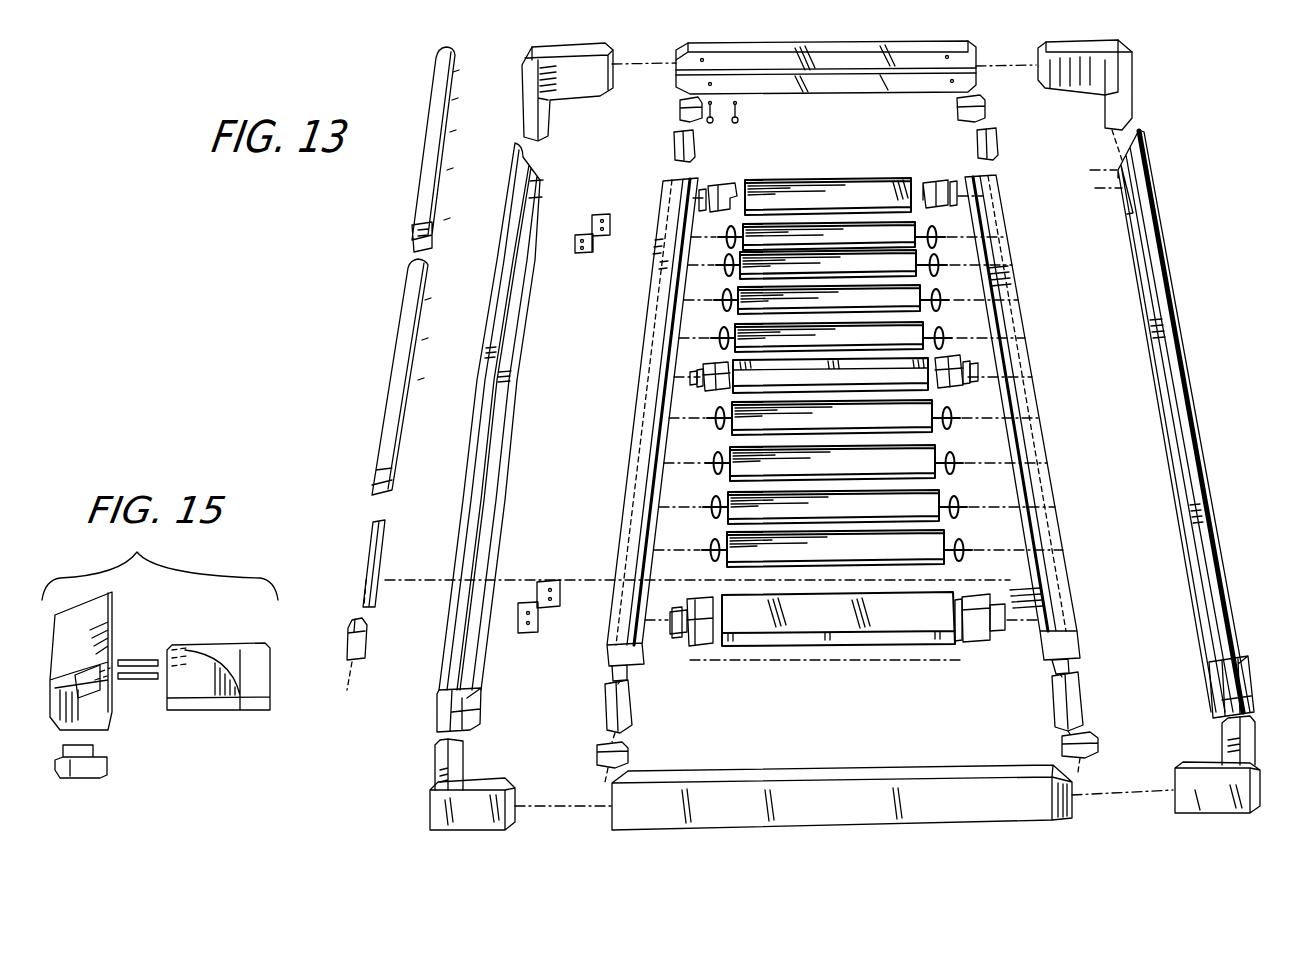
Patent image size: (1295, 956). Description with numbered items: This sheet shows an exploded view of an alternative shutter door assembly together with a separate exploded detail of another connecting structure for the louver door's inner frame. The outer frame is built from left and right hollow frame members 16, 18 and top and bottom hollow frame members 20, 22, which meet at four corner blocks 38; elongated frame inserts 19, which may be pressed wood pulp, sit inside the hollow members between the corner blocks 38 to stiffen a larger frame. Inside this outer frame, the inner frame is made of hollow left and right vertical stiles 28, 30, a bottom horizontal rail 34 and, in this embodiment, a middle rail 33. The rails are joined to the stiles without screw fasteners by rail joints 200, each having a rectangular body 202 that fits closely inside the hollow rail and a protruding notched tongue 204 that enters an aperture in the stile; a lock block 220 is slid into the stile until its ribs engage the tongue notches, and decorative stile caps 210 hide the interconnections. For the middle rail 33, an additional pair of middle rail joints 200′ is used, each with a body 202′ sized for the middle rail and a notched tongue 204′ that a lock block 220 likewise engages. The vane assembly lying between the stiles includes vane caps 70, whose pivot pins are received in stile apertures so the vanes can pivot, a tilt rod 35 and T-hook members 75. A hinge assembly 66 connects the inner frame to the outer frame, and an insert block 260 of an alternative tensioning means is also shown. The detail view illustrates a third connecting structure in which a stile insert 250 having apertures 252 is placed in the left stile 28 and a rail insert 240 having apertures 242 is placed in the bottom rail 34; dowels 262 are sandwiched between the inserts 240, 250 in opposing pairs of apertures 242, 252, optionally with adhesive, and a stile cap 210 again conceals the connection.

In FIG. 13, the left hollow frame member 16 is at (512, 337).
In FIG. 13, the right hollow frame member 18 is at (1167, 293).
In FIG. 13, the frame insert 19 is at (473, 703).
In FIG. 13, the top hollow frame member 20 is at (858, 90).
In FIG. 13, the bottom hollow frame member 22 is at (860, 770).
In FIG. 13, the left vertical stile 28 is at (624, 478).
In FIG. 15, the left vertical stile 28 is at (88, 603).
In FIG. 13, the right vertical stile 30 is at (1030, 480).
In FIG. 13, the middle rail 33 is at (890, 372).
In FIG. 13, the bottom horizontal rail 34 is at (883, 620).
In FIG. 15, the bottom horizontal rail 34 is at (247, 670).
In FIG. 13, the tilt rod 35 is at (398, 358).
In FIG. 13, the corner block 38 is at (563, 64).
In FIG. 13, the hinge assembly 66 is at (592, 236).
In FIG. 13, the vane cap 70 is at (727, 300).
In FIG. 13, the T-hook member 75 is at (407, 413).
In FIG. 13, the rail joint 200 is at (732, 186).
In FIG. 13, the rail joint body 202 is at (972, 597).
In FIG. 13, the tongue 204 is at (703, 190).
In FIG. 13, the middle rail joint 200′ is at (710, 390).
In FIG. 13, the middle rail joint body 202′ is at (700, 380).
In FIG. 13, the notched tongue of middle rail joint 204′ is at (695, 372).
In FIG. 13, the stile cap 210 is at (678, 104).
In FIG. 15, the stile cap 210 is at (97, 764).
In FIG. 13, the lock block 220 is at (672, 148).
In FIG. 13, the insert block 260 is at (987, 245).
In FIG. 15, the rail insert 240 is at (200, 690).
In FIG. 15, the rail insert apertures 242 is at (205, 640).
In FIG. 15, the stile insert 250 is at (77, 680).
In FIG. 15, the stile insert apertures 252 is at (107, 680).
In FIG. 15, the dowel 262 is at (148, 673).